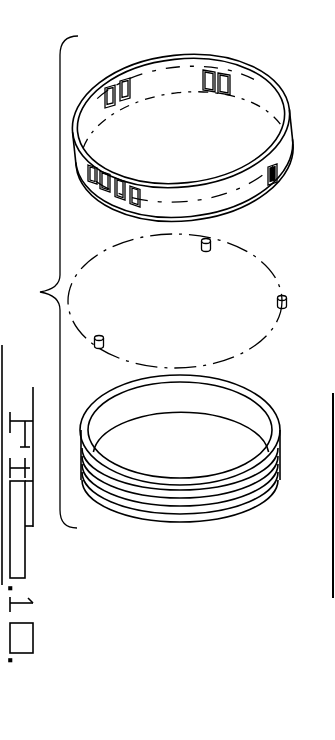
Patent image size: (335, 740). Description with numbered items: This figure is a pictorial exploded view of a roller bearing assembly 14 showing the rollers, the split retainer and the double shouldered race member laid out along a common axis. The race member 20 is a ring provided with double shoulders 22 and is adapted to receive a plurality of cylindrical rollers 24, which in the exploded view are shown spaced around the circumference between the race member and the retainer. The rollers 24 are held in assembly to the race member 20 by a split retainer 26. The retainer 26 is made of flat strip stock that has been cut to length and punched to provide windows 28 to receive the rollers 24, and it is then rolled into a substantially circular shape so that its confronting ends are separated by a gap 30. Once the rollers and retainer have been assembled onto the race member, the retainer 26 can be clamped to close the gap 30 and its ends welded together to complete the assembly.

The filter ring assembly 14 is at (39, 282).
The race member 20 is at (197, 504).
The double shoulders 22 is at (283, 450).
The cylindrical rollers 24 is at (286, 307).
The split retainer 26 is at (292, 172).
The windows 28 is at (272, 190).
The gap 30 is at (112, 173).